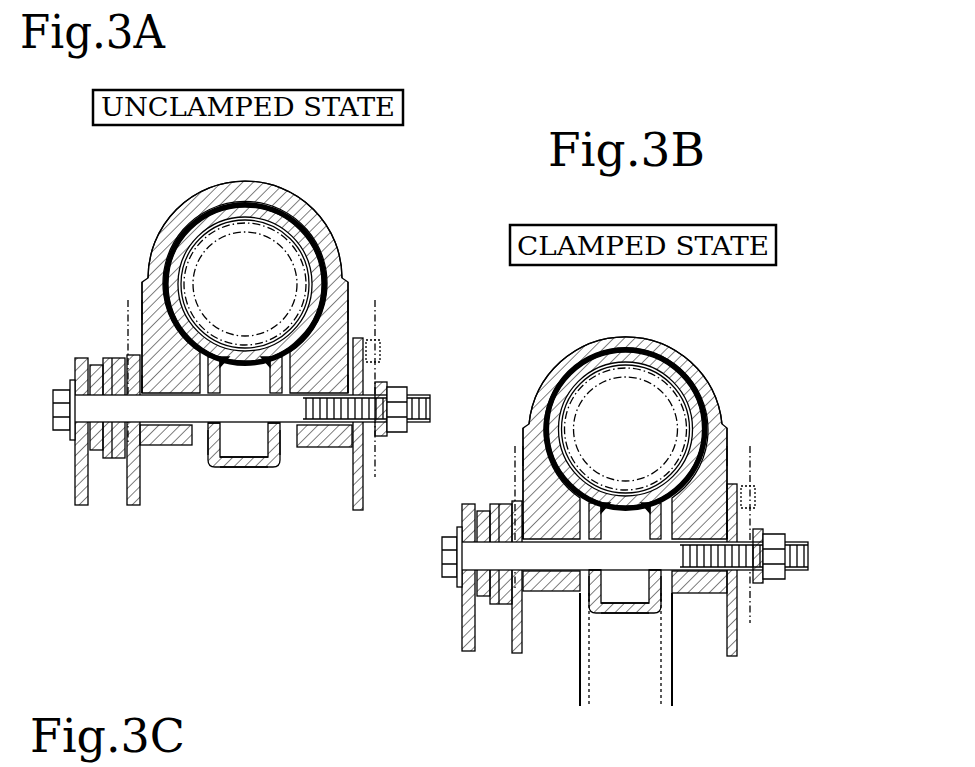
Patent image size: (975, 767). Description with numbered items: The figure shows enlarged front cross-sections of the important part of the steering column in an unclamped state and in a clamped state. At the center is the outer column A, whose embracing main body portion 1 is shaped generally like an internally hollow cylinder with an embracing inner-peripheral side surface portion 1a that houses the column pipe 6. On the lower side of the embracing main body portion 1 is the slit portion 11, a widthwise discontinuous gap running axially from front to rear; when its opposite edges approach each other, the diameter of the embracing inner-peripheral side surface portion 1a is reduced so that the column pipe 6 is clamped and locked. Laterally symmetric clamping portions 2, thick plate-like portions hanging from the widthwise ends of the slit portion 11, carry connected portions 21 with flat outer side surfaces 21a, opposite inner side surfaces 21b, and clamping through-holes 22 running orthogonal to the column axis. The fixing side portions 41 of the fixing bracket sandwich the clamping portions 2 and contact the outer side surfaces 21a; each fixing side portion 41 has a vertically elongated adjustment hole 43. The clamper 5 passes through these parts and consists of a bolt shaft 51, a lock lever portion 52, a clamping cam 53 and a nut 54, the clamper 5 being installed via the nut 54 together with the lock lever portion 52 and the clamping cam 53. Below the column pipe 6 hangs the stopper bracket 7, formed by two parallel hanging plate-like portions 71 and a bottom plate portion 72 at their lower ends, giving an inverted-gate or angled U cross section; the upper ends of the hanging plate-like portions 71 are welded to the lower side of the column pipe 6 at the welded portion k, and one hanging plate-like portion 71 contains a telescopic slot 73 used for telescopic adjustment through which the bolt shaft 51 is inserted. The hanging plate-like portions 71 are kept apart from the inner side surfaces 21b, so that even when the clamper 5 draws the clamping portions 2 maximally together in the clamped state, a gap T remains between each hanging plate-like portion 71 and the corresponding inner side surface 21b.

In FIG. 3A, the embracing main body portion 1 is at (330, 230).
In FIG. 3B, the embracing main body portion 1 is at (660, 398).
In FIG. 3A, the embracing inner-peripheral side surface portion 1a is at (300, 230).
In FIG. 3B, the embracing inner-peripheral side surface portion 1a is at (646, 401).
In FIG. 3A, the outer column A is at (342, 248).
In FIG. 3B, the outer column A is at (657, 376).
In FIG. 3A, the clamping portion 2 is at (160, 458).
In FIG. 3B, the clamping portion 2 is at (625, 496).
In FIG. 3A, the clamper 5 is at (431, 394).
In FIG. 3B, the clamper 5 is at (638, 545).
In FIG. 3A, the column pipe 6 is at (197, 225).
In FIG. 3B, the column pipe 6 is at (625, 404).
In FIG. 3A, the stopper bracket 7 is at (226, 480).
In FIG. 3B, the stopper bracket 7 is at (625, 618).
In FIG. 3A, the slit portion 11 is at (205, 360).
In FIG. 3B, the slit portion 11 is at (567, 502).
In FIG. 3A, the welded portion k is at (212, 355).
In FIG. 3B, the welded portion k is at (625, 474).
In FIG. 3A, the connected portion 21 is at (142, 290).
In FIG. 3B, the connected portion 21 is at (623, 477).
In FIG. 3A, the outer side surface 21a is at (128, 308).
In FIG. 3B, the outer side surface 21a is at (624, 454).
In FIG. 3A, the inner side surface 21b is at (200, 378).
In FIG. 3B, the inner side surface 21b is at (623, 507).
In FIG. 3A, the clamping through-hole 22 is at (175, 410).
In FIG. 3B, the clamping through-hole 22 is at (602, 533).
In FIG. 3A, the fixing side portion 41 is at (131, 505).
In FIG. 3B, the fixing side portion 41 is at (624, 584).
In FIG. 3A, the adjustment hole 43 is at (128, 445).
In FIG. 3B, the adjustment hole 43 is at (635, 576).
In FIG. 3A, the bolt shaft 51 is at (248, 430).
In FIG. 3B, the bolt shaft 51 is at (629, 617).
In FIG. 3A, the lock lever portion 52 is at (80, 505).
In FIG. 3B, the lock lever portion 52 is at (452, 595).
In FIG. 3A, the clamping cam 53 is at (97, 452).
In FIG. 3B, the clamping cam 53 is at (490, 605).
In FIG. 3A, the nut 54 is at (392, 432).
In FIG. 3B, the nut 54 is at (774, 574).
In FIG. 3A, the hanging plate-like portion 71 is at (212, 440).
In FIG. 3B, the hanging plate-like portion 71 is at (623, 606).
In FIG. 3A, the bottom plate portion 72 is at (240, 466).
In FIG. 3B, the bottom plate portion 72 is at (625, 646).
In FIG. 3A, the telescopic slot 73 is at (208, 425).
In FIG. 3B, the telescopic slot 73 is at (612, 562).
In FIG. 3B, the gap T is at (626, 662).